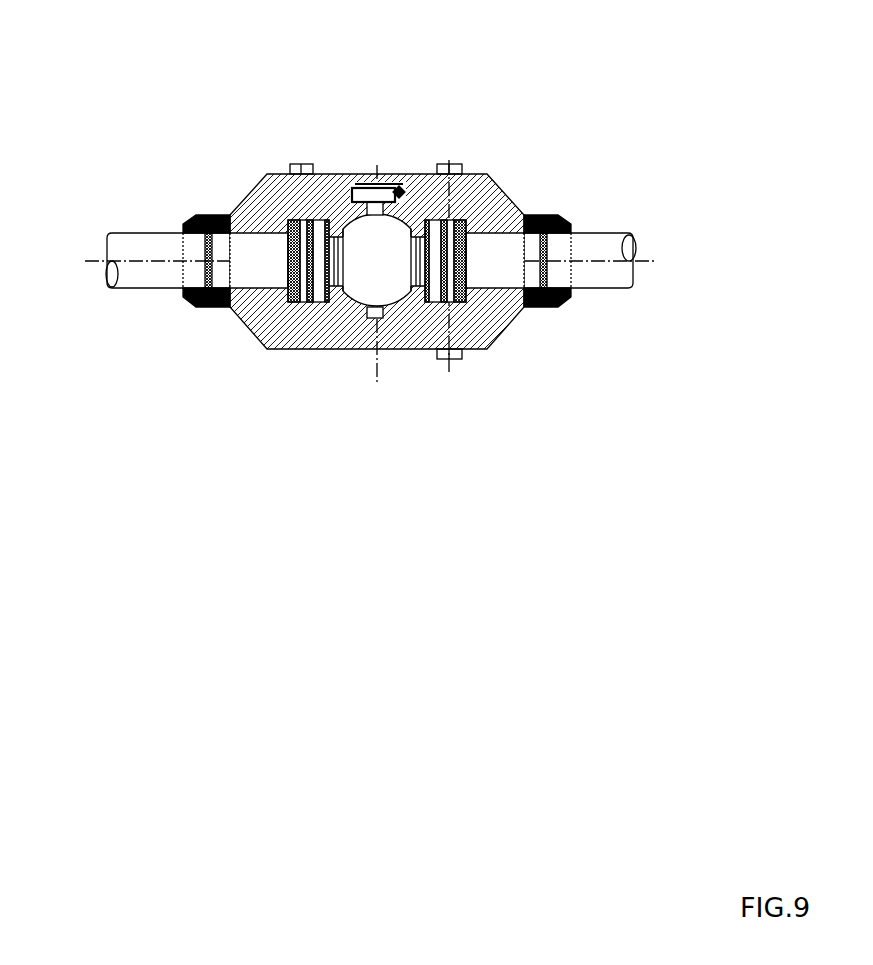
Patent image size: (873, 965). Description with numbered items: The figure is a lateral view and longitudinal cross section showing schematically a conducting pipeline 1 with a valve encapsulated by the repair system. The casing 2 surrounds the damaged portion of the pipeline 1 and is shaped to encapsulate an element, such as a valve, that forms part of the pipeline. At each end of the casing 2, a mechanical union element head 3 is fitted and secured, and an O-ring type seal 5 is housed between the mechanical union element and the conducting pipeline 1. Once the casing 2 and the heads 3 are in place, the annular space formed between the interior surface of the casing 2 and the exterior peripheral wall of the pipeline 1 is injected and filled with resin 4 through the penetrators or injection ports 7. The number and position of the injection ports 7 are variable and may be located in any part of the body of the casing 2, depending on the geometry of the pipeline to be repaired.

The conducting pipeline 1 is at (143, 230).
The casing 2 is at (398, 168).
The mechanical union element head 3 is at (207, 212).
The resin 4 is at (353, 333).
The O-ring type seal 5 is at (200, 308).
The injection ports 7 is at (298, 163).